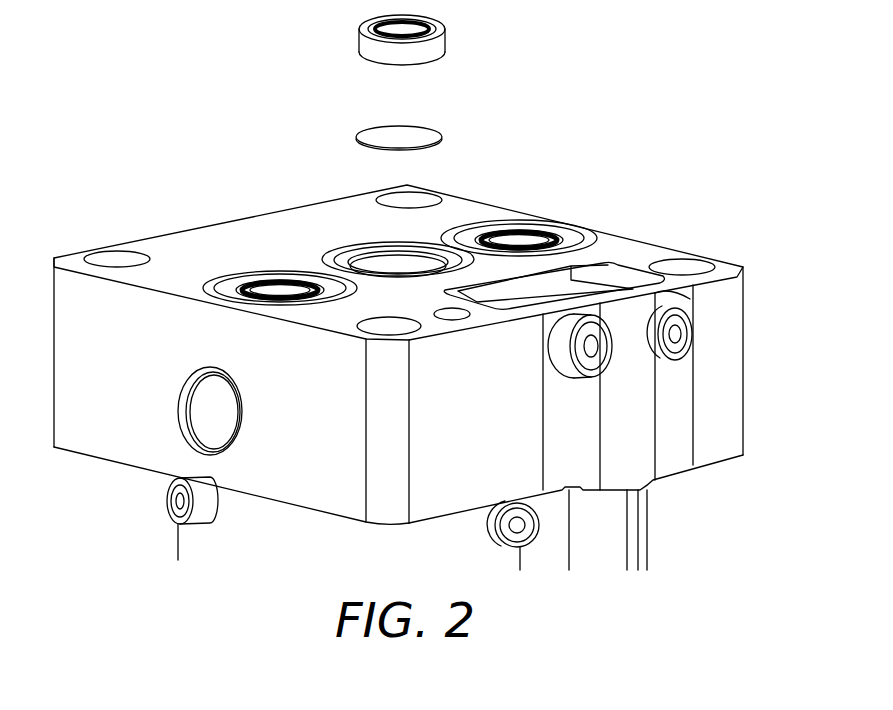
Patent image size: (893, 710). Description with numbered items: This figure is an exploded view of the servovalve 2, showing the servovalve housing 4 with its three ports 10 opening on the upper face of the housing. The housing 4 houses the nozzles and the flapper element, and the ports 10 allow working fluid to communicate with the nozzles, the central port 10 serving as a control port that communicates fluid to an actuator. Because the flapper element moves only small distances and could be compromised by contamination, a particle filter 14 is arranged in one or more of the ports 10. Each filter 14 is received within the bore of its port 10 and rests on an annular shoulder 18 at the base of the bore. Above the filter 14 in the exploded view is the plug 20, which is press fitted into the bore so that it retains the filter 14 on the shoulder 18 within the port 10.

The servovalve 2 is at (712, 192).
The servovalve housing 4 is at (733, 325).
The port 10 is at (213, 282).
The particle filter 14 is at (437, 136).
The annular shoulder 18 is at (233, 295).
The plug 20 is at (457, 42).